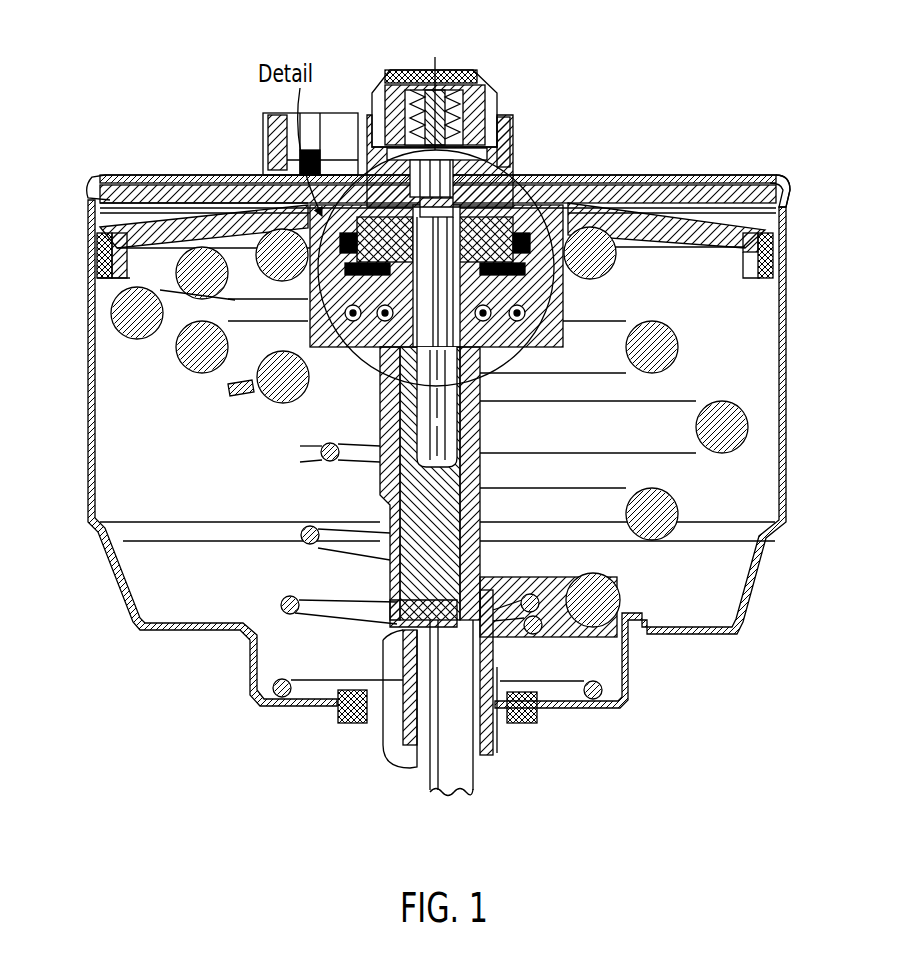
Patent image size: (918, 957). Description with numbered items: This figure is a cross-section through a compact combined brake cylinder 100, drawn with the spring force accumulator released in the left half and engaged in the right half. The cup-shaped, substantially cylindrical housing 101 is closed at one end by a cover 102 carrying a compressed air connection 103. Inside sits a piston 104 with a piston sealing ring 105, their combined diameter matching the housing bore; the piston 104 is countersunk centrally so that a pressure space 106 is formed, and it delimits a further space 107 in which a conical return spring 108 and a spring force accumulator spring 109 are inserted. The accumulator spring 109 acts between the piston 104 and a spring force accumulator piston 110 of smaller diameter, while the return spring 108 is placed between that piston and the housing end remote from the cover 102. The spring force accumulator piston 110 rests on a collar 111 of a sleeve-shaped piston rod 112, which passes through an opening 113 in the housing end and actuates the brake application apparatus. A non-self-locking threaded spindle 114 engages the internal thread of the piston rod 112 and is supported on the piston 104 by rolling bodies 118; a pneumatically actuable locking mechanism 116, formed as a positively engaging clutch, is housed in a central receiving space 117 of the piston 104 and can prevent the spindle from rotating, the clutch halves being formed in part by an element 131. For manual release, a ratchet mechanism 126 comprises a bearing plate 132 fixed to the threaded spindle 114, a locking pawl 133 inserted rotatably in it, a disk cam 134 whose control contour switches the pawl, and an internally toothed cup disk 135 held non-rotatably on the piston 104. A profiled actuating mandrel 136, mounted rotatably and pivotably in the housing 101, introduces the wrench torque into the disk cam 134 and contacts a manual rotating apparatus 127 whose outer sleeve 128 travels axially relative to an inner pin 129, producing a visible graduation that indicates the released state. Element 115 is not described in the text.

The compact combined brake cylinder 100 is at (767, 623).
The housing 101 is at (784, 480).
The cover 102 is at (125, 183).
The compressed air connection 103 is at (348, 128).
The piston 104 is at (178, 225).
The piston sealing ring 105 is at (100, 262).
The pressure space 106 is at (270, 192).
The further space 107 is at (744, 470).
The conical return spring 108 is at (596, 706).
The spring force accumulator spring 109 is at (665, 520).
The spring force accumulator piston 110 is at (232, 394).
The collar 111 is at (322, 455).
The piston rod 112 is at (410, 745).
The opening 113 is at (500, 728).
The threaded spindle 114 is at (368, 722).
The piston sleeve 115 is at (380, 490).
The pneumatically actuable locking mechanism 116 is at (600, 322).
The central receiving space 117 is at (120, 330).
The rolling bodies 118 is at (380, 412).
The ratchet mechanism 126 is at (715, 177).
The manual rotating apparatus 127 is at (488, 100).
The outer sleeve 128 is at (503, 120).
The inner pin 129 is at (440, 65).
The element 131 is at (482, 386).
The bearing plate 132 is at (555, 302).
The locking pawl 133 is at (775, 258).
The disk cam 134 is at (632, 177).
The cup disk 135 is at (565, 200).
The actuating mandrel 136 is at (480, 207).